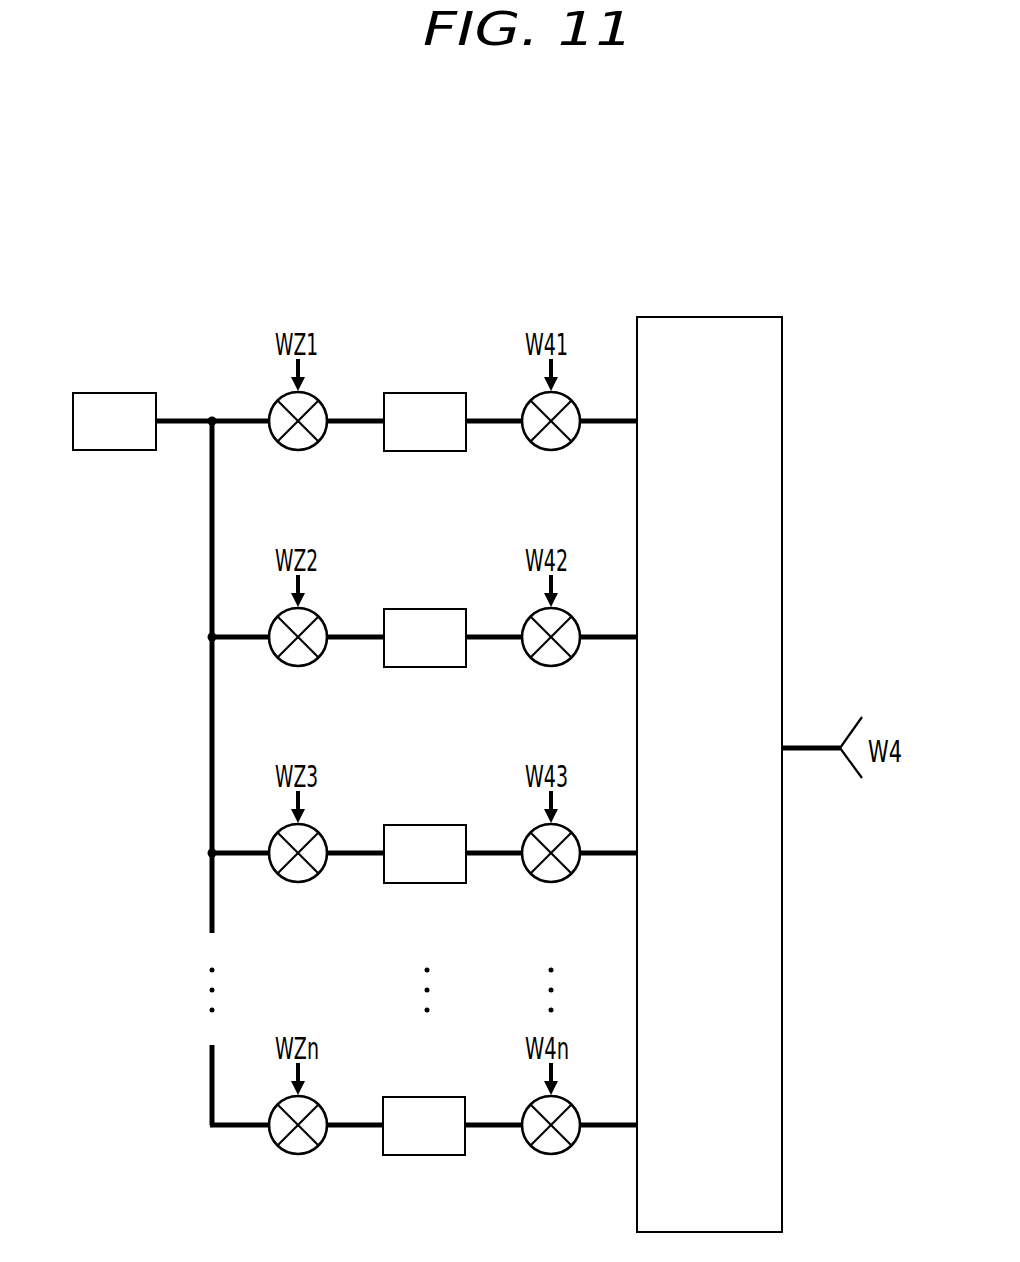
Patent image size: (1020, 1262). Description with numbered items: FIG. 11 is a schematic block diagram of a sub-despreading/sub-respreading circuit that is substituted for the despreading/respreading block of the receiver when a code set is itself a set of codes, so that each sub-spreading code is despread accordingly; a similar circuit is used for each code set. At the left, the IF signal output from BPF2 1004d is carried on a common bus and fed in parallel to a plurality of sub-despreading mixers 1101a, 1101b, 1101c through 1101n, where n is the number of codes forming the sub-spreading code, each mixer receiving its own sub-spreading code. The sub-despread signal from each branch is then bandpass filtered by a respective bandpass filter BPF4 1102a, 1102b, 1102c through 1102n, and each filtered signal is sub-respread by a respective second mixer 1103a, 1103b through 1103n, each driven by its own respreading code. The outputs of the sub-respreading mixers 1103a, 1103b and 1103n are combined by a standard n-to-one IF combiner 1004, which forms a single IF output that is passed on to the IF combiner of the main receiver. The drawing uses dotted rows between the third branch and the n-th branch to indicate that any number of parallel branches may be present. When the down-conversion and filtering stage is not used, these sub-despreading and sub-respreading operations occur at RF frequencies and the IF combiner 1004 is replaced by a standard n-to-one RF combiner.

The BPF2 1004d is at (117, 392).
The mixer 1101a is at (296, 452).
The mixer 1101b is at (296, 668).
The mixer 1101c is at (296, 884).
The mixer 1101n is at (296, 1156).
The bandpass filter BPF4 1102a is at (421, 392).
The bandpass filter BPF4 1102b is at (421, 608).
The bandpass filter BPF4 1102c is at (421, 824).
The bandpass filter BPF4 1102n is at (421, 1096).
The mixer 1103a is at (549, 452).
The mixer 1103b is at (549, 668).
The mixer 1103n is at (549, 1156).
The IF combiner 1004 is at (706, 316).